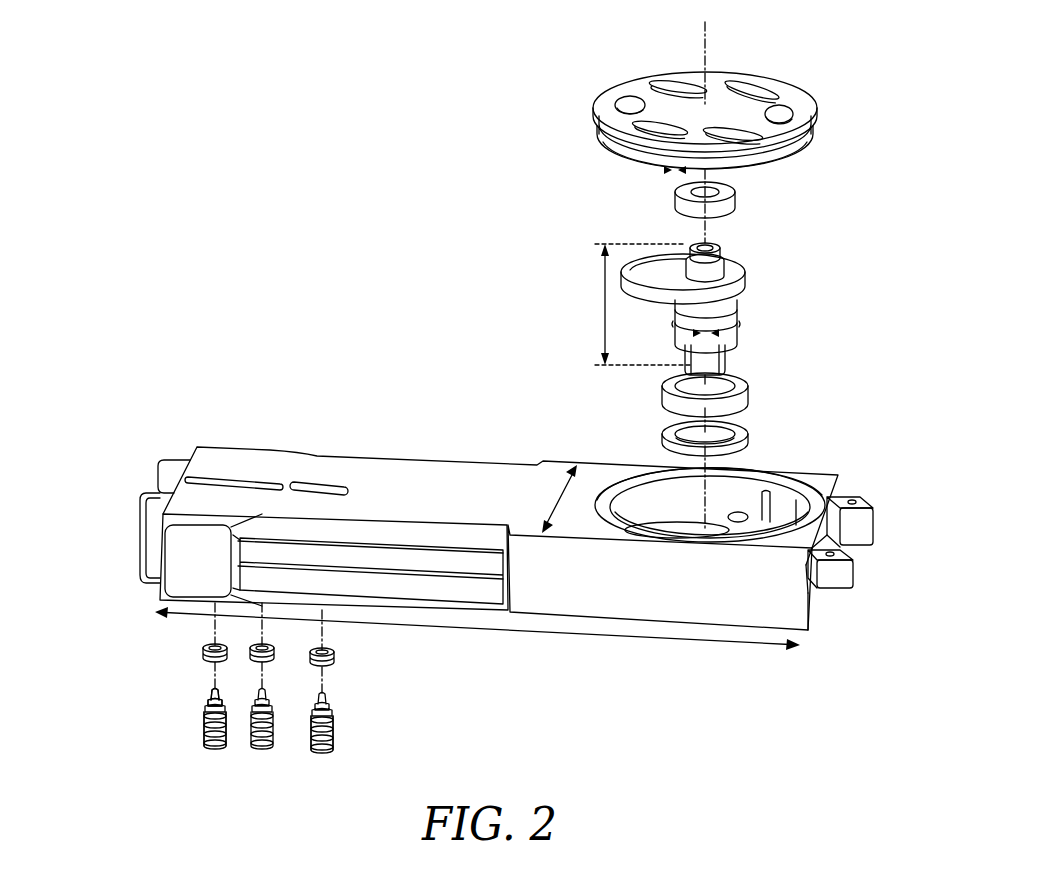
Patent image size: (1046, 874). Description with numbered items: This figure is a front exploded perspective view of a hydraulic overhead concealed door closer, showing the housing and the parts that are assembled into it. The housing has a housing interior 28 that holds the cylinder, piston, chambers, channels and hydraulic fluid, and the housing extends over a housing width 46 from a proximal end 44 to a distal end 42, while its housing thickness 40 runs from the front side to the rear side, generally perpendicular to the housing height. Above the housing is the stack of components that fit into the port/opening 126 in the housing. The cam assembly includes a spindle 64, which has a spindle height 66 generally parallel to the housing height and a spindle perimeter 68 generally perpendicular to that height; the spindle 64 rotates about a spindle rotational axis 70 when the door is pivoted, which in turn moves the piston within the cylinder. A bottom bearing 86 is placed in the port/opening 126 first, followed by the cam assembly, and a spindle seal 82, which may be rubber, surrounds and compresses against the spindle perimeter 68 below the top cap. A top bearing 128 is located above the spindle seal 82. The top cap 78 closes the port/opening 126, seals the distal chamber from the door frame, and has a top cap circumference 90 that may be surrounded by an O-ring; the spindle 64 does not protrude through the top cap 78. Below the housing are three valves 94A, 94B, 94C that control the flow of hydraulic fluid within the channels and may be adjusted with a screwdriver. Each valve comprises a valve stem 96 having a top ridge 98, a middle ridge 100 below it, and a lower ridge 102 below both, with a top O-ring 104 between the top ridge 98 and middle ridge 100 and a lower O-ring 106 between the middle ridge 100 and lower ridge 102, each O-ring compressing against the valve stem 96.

The spindle rotational axis 70 is at (707, 42).
The top cap 78 is at (760, 82).
The top cap circumference 90 is at (600, 146).
The top bearing 128 is at (735, 200).
The spindle height 66 is at (604, 318).
The spindle perimeter 68 is at (740, 327).
The spindle 64 is at (725, 360).
The bottom bearing 86 is at (750, 402).
The spindle seal 82 is at (747, 437).
The housing thickness 40 is at (558, 503).
The port/opening 126 is at (668, 478).
The housing interior 28 is at (743, 505).
The distal end 42 is at (873, 525).
The proximal end 44 is at (170, 477).
The housing width 46 is at (727, 642).
The top O-ring 104 is at (335, 652).
The lower O-ring 106 is at (335, 662).
The top ridge 98 is at (205, 720).
The middle ridge 100 is at (205, 728).
The lower ridge 102 is at (205, 737).
The valve 94A is at (210, 748).
The valve 94B is at (262, 752).
The valve 94C is at (322, 752).
The valve stem 96 is at (340, 731).